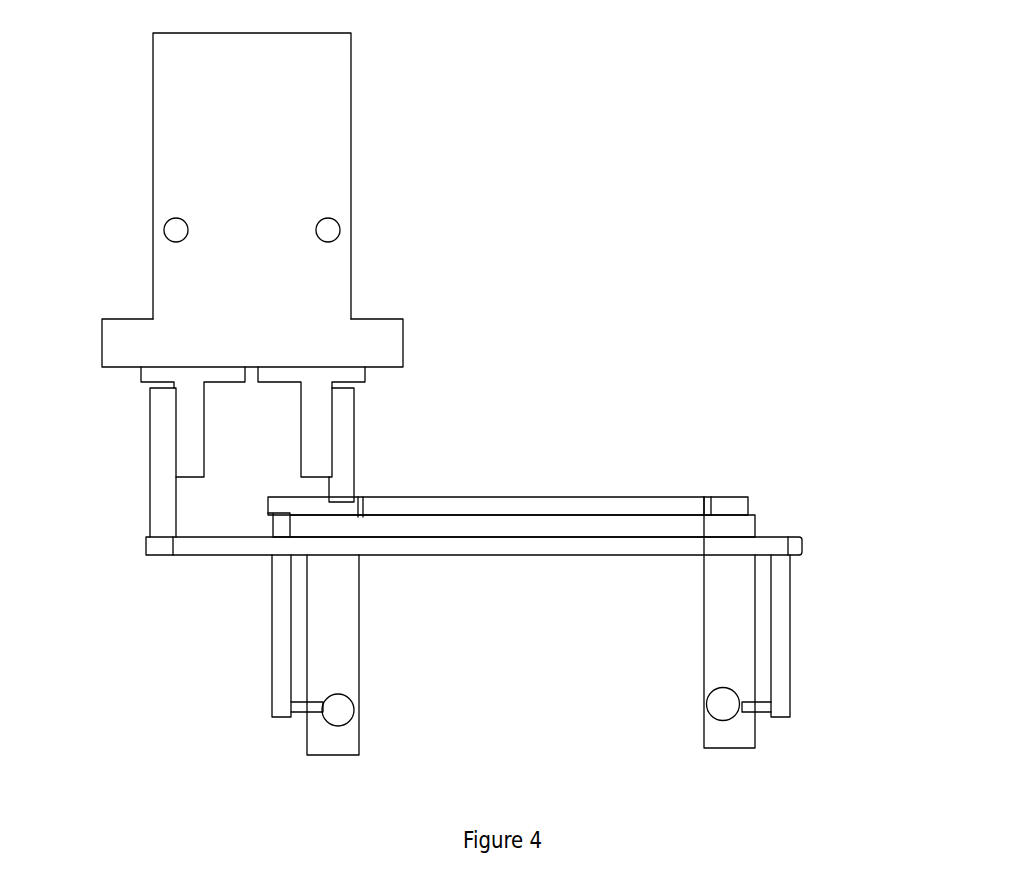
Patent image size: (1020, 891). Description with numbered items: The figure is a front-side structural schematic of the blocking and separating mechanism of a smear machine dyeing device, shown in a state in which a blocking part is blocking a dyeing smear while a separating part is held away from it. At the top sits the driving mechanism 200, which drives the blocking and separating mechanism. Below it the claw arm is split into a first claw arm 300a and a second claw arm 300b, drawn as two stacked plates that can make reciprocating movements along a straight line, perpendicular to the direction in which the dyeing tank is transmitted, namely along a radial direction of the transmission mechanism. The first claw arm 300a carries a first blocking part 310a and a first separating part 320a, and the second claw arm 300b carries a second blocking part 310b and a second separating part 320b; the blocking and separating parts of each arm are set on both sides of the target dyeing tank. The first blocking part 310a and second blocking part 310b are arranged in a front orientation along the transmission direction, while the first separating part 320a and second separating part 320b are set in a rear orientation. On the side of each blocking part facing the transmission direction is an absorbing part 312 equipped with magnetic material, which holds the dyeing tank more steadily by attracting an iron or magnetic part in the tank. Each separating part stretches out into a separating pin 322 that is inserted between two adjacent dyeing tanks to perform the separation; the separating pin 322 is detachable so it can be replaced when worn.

The driving mechanism 200 is at (306, 170).
The first claw arm 300a is at (515, 508).
The second claw arm 300b is at (608, 542).
The first blocking part 310a is at (720, 612).
The second blocking part 310b is at (338, 615).
The absorbing part 312 is at (347, 713).
The first separating part 320a is at (280, 633).
The second separating part 320b is at (780, 623).
The separating pin 322 is at (300, 715).